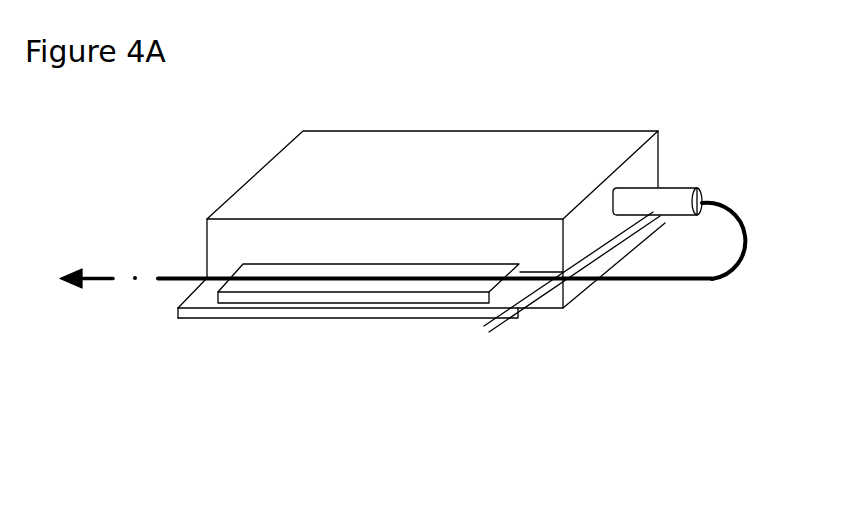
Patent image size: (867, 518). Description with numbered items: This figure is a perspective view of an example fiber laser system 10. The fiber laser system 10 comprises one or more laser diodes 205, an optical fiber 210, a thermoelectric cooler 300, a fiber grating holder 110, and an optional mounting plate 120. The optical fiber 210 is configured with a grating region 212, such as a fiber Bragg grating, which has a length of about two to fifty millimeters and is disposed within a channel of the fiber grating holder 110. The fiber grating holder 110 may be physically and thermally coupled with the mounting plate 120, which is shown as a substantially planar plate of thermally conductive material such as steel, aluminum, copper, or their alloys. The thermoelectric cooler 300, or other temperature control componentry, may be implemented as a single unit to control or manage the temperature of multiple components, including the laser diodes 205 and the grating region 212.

The fiber laser system 10 is at (683, 62).
The laser diode 205 is at (582, 147).
The fiber grating holder 110 is at (253, 266).
The grating region 212 is at (357, 283).
The mounting plate 120 is at (512, 305).
The optical fiber 210 is at (737, 220).
The thermoelectric cooler 300 is at (638, 238).